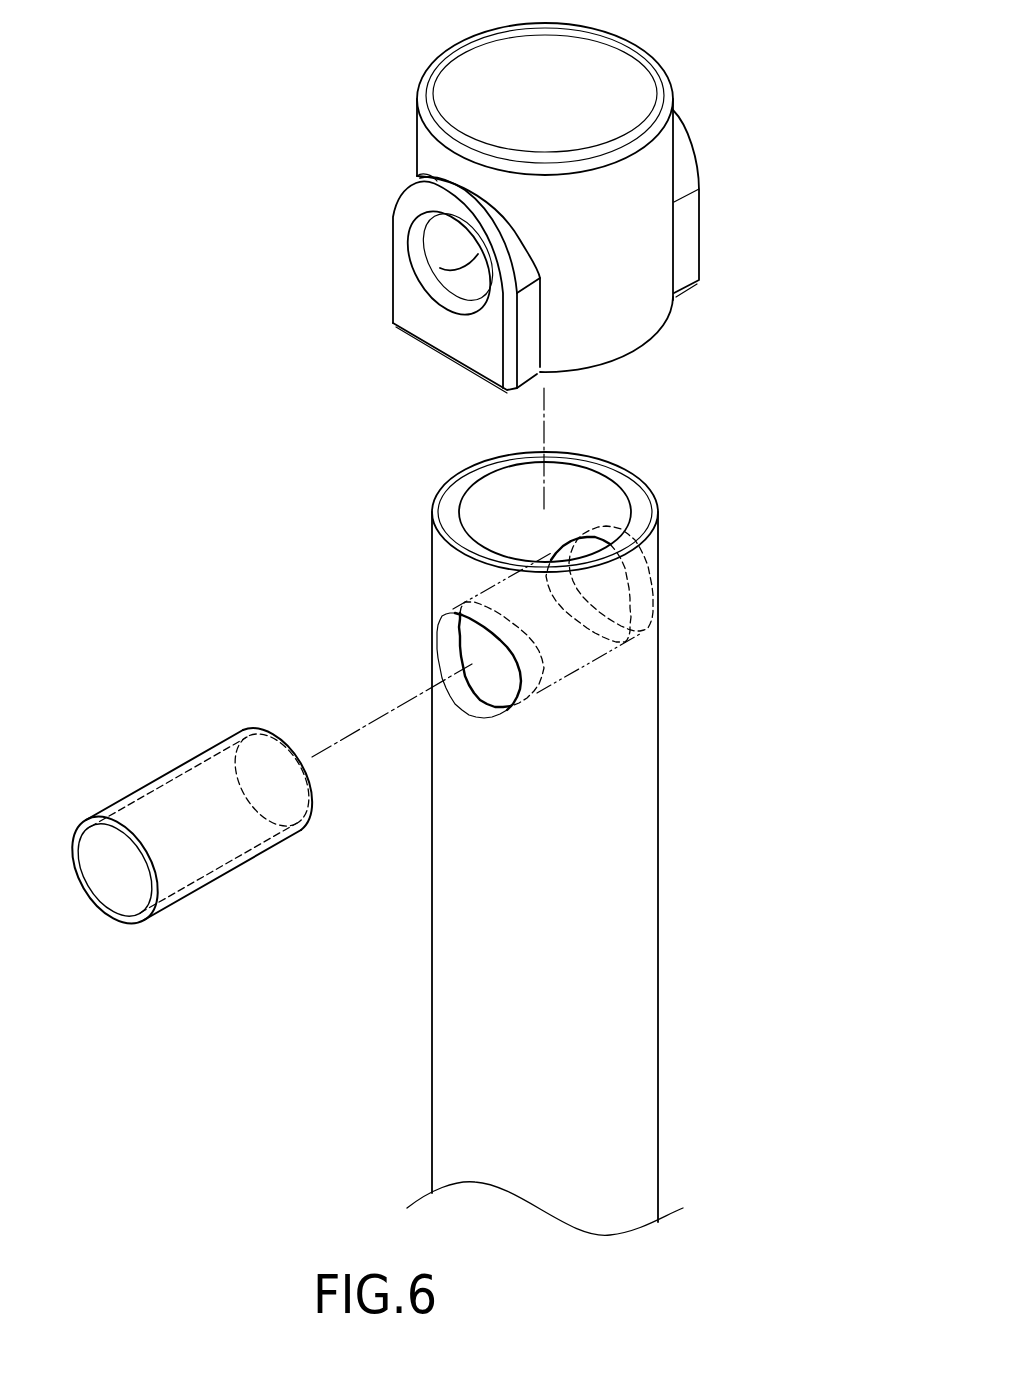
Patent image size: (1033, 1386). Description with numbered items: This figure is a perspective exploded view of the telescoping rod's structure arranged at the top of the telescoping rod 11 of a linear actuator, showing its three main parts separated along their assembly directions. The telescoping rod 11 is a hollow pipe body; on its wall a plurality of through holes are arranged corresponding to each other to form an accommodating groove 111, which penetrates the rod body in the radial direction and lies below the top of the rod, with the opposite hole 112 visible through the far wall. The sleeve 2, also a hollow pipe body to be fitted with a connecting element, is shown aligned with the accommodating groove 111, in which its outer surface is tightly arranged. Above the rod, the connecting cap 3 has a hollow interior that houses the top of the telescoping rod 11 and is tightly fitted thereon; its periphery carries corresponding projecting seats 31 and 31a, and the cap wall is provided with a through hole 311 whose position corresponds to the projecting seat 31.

The sleeve 2 is at (163, 772).
The connecting cap 3 is at (555, 256).
The telescoping rod 11 is at (533, 843).
The projecting seat 31 is at (417, 283).
The projecting seat 31a is at (687, 233).
The accommodating groove 111 is at (432, 668).
The rear through hole 112 is at (447, 647).
The through hole 311 is at (418, 252).